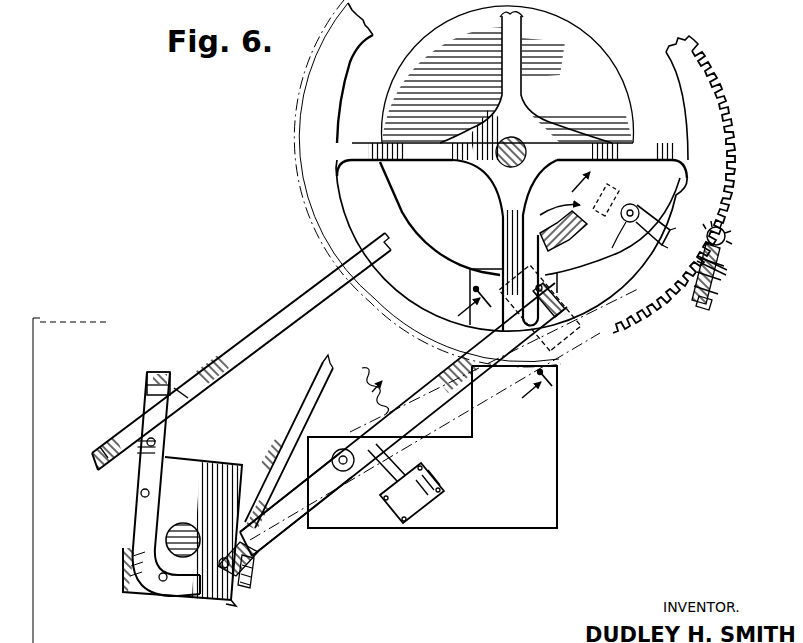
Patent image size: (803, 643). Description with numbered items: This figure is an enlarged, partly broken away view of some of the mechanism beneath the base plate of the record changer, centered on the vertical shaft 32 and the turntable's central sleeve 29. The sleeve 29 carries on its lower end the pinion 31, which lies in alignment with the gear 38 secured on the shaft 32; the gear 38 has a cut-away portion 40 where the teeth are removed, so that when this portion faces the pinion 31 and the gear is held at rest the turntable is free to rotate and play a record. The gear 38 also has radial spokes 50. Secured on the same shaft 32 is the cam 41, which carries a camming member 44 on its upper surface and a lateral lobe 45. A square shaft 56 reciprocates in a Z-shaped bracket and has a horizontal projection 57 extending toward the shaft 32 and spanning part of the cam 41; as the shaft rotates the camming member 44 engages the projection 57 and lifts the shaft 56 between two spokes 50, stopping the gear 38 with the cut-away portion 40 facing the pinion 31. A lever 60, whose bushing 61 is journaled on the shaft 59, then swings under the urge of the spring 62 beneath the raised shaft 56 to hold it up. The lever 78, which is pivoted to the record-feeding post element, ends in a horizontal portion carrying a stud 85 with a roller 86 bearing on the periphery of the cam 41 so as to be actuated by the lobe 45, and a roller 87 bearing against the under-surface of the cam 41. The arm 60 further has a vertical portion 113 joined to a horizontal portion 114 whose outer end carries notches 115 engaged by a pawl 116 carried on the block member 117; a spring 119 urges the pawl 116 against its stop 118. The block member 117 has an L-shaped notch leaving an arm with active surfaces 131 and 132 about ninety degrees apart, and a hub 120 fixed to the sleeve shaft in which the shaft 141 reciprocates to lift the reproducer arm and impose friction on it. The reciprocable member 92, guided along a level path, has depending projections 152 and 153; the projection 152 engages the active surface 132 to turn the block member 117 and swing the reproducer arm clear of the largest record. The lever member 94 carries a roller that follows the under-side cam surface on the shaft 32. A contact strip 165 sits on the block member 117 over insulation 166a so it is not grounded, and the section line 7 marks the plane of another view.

The cam 41 is at (592, 62).
The radial spokes 50 is at (357, 143).
The lateral lobe 45 is at (390, 164).
The vertical shaft 32 is at (518, 141).
The gear 38 is at (702, 80).
The horizontal projection 57 is at (522, 246).
The square shaft 56 is at (548, 314).
The camming member 44 is at (598, 250).
The roller 87 is at (615, 196).
The roller 86 is at (633, 206).
The lever 78 is at (666, 232).
The stud 85 is at (614, 244).
The cut-away portion 40 is at (716, 230).
The central sleeve 29 is at (718, 286).
The pinion 31 is at (700, 296).
The section line 7- 7 is at (491, 356).
The reciprocable member 92 is at (252, 335).
The lever member 94 is at (279, 410).
The lever 60 is at (440, 368).
The shaft 59 is at (344, 449).
The bushing 61 is at (372, 478).
The spring 62 is at (384, 362).
The active surface 132 is at (168, 432).
The active surface 131 is at (147, 391).
The insulation 166a is at (162, 383).
The depending projection 152 is at (184, 396).
The depending projection 153 is at (100, 444).
The contact strip 165 is at (140, 447).
The block member 117 is at (133, 478).
The hub 120 is at (181, 522).
The shaft 141 is at (133, 554).
The horizontal portion 114 is at (272, 500).
The vertical portion 113 is at (270, 530).
The notches 115 is at (256, 552).
The pawl 116 is at (250, 566).
The spring 119 is at (246, 578).
The stop 118 is at (226, 604).